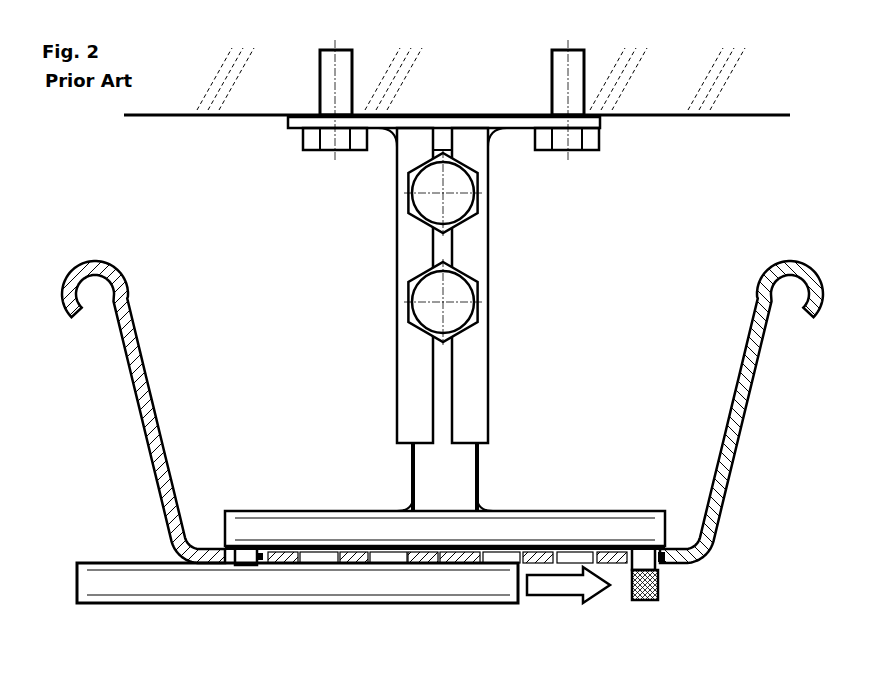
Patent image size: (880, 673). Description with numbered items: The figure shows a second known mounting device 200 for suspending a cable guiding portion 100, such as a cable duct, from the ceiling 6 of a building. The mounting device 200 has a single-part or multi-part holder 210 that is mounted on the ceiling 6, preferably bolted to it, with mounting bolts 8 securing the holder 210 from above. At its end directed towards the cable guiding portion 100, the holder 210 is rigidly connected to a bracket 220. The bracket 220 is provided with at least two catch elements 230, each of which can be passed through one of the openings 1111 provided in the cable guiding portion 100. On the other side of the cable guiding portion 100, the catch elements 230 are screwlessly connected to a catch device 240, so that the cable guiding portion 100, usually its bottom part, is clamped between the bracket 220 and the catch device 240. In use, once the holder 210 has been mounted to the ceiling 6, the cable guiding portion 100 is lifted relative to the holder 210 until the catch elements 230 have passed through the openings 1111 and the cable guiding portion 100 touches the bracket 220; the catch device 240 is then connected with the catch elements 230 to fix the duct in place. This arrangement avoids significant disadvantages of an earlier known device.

The ceiling 6 is at (257, 117).
The mounting bolts 8 is at (347, 68).
The cable guiding portion 100 is at (753, 469).
The mounting device 200 is at (550, 384).
The holder 210 is at (498, 238).
The bracket 220 is at (523, 508).
The catch elements 230 is at (243, 553).
The catch device 240 is at (223, 582).
The openings 1111 is at (661, 566).